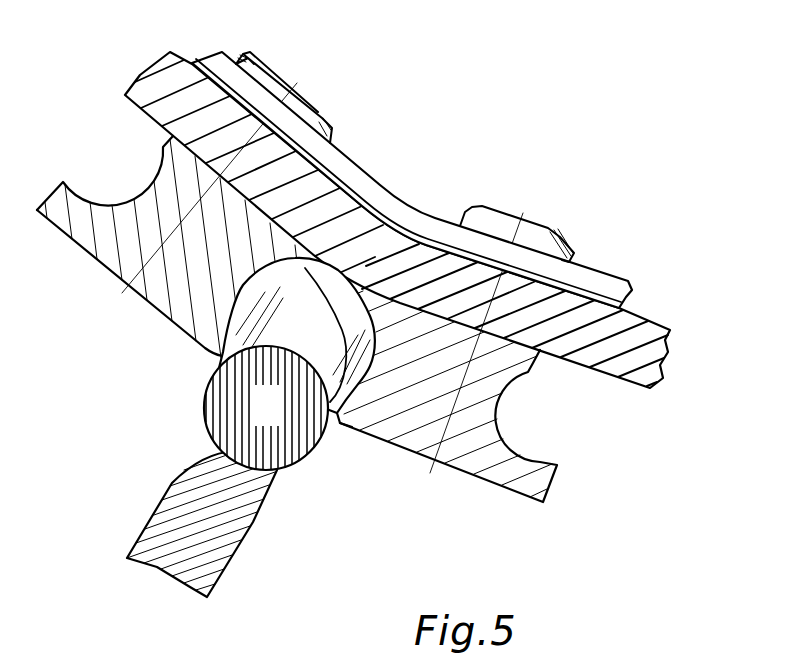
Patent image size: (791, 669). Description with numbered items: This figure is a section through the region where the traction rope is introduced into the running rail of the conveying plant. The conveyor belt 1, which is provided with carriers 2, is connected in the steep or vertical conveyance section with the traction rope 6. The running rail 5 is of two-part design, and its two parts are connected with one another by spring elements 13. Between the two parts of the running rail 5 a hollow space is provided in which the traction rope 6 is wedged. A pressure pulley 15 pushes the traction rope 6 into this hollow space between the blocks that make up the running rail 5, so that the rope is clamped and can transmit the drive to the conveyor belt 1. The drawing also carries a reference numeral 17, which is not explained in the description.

The rail plate 1 is at (642, 378).
The guide strip 2 is at (422, 180).
The clamping jaw 5 is at (511, 468).
The cylindrical pin 6 is at (274, 416).
The contact surface 13 is at (410, 230).
The clamping bolt 15 is at (165, 507).
The bearing edge 17 is at (340, 428).